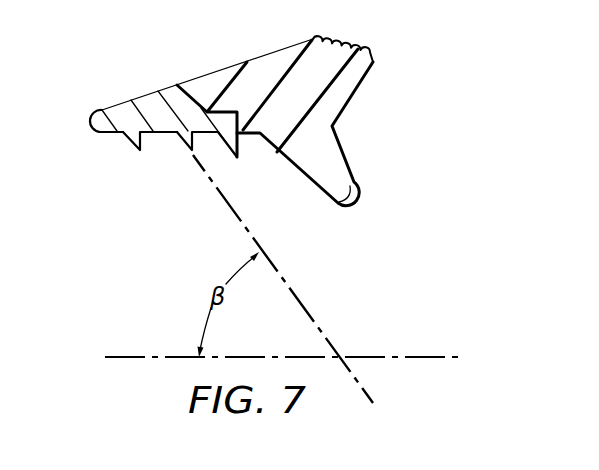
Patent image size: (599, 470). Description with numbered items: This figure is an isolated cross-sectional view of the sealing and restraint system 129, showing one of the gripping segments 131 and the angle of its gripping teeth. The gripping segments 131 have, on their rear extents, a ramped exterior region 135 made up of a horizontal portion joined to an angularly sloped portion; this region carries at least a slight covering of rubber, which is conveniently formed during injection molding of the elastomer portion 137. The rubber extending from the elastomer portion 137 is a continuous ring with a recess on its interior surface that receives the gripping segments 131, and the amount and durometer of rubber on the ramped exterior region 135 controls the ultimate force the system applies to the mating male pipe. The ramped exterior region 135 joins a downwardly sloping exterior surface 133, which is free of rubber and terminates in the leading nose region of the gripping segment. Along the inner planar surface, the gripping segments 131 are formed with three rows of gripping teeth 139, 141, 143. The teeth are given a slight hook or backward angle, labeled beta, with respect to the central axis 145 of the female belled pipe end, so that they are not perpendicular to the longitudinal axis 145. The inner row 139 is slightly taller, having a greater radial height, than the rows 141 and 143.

The sealing and restraint system 129 is at (256, 116).
The gripping segments 131 is at (147, 108).
The downwardly sloping exterior surface 133 is at (120, 103).
The ramped exterior region 135 is at (194, 108).
The elastomer portion 137 is at (272, 77).
The inner row of gripping teeth 139 is at (229, 153).
The row of gripping teeth 141 is at (188, 150).
The row of gripping teeth 143 is at (133, 148).
The central axis 145 is at (426, 359).